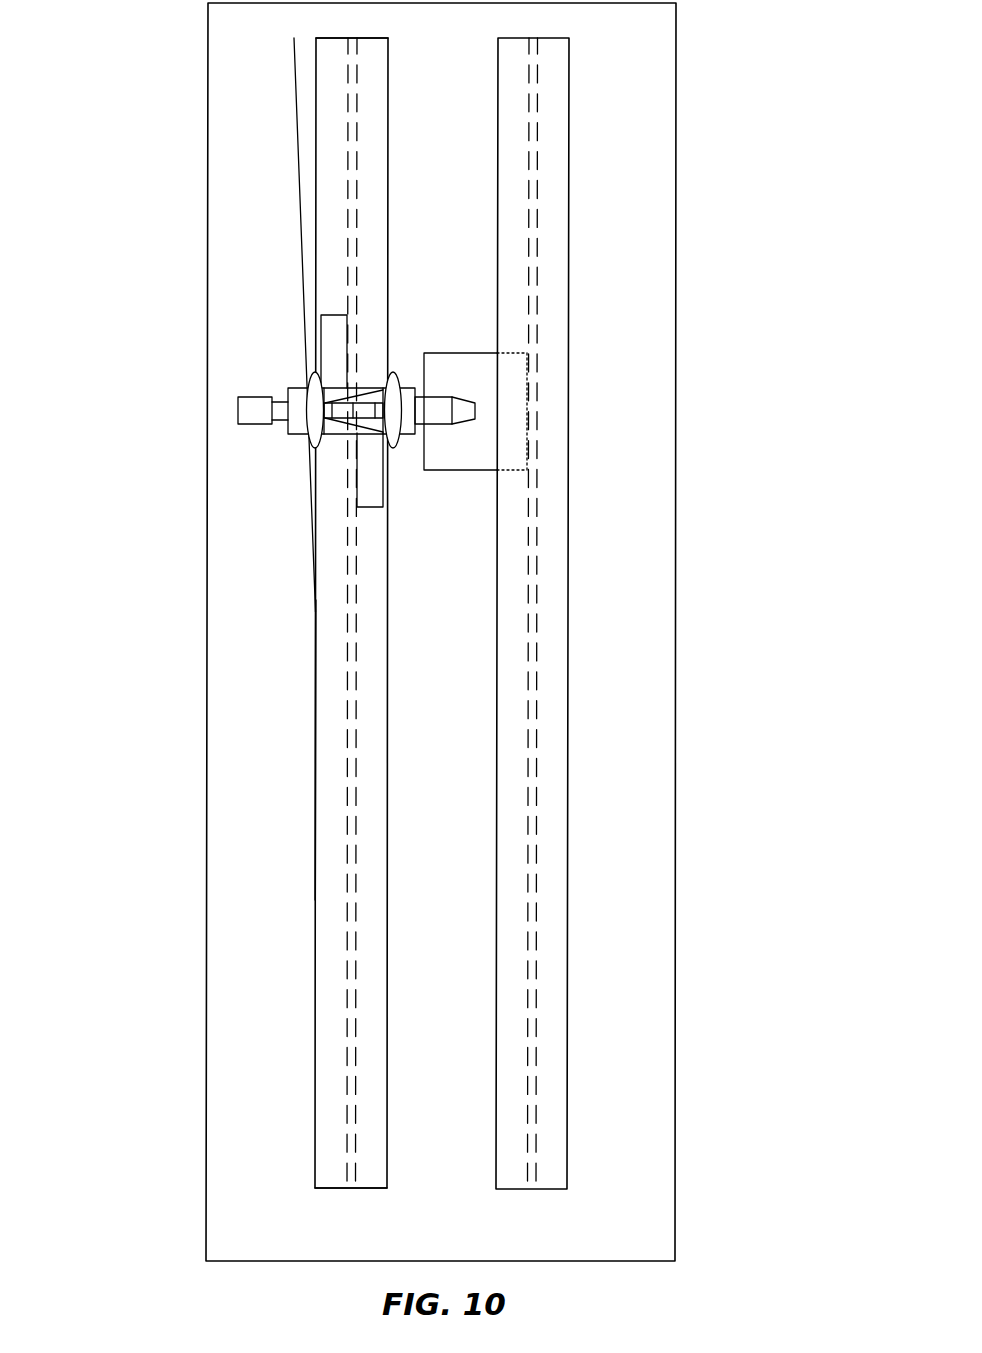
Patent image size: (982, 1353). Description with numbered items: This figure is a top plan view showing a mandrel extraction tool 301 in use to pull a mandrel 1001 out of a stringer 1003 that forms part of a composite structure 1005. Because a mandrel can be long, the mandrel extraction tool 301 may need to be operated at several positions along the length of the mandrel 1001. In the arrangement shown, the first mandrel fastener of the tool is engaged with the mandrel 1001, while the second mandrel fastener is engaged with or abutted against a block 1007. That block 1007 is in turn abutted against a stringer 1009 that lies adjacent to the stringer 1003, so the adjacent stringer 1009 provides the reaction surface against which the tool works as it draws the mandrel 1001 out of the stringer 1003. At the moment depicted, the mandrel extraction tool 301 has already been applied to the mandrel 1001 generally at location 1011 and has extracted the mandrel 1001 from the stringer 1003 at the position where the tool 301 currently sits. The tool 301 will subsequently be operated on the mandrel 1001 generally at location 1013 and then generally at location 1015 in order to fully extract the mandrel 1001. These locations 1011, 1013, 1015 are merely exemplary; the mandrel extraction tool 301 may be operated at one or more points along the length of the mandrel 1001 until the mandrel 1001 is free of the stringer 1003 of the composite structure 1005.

The composite structure 1005 is at (203, 671).
The stringer 1003 is at (333, 898).
The location 1011 is at (294, 42).
The location 1015 is at (313, 1180).
The location 1013 is at (315, 772).
The mandrel 1001 is at (308, 143).
The stringer 1009 is at (550, 195).
The block 1007 is at (480, 447).
The mandrel extraction tool 301 is at (278, 384).